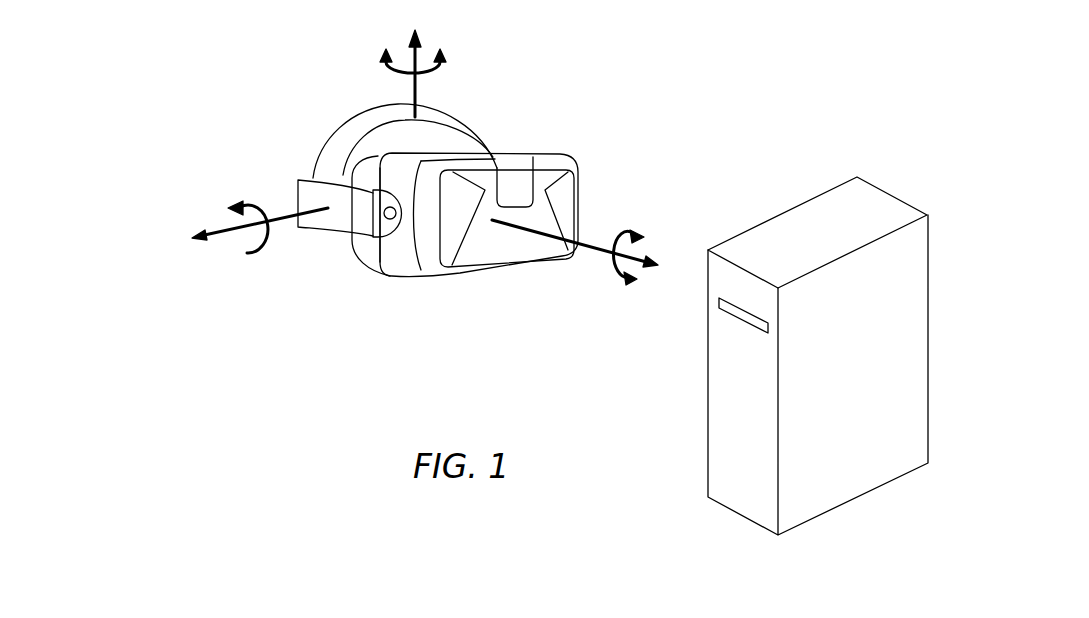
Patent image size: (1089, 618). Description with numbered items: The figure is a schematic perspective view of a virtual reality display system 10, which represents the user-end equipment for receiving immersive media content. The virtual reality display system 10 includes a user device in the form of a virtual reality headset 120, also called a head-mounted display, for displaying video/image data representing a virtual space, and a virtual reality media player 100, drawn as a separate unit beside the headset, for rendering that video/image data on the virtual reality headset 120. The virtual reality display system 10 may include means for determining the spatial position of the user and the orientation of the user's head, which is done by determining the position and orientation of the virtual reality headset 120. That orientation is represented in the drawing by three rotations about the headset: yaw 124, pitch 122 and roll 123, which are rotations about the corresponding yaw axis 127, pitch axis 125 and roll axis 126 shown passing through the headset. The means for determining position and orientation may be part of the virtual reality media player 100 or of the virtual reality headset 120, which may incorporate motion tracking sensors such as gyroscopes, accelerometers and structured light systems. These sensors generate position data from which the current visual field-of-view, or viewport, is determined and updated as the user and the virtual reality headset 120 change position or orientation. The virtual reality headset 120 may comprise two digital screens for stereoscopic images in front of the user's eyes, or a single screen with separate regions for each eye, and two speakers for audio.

The virtual reality display system 10 is at (985, 103).
The virtual reality media player 100 is at (878, 485).
The virtual reality headset 120 is at (497, 273).
The pitch 122 is at (270, 250).
The roll 123 is at (616, 224).
The yaw 124 is at (382, 60).
The pitch axis 125 is at (218, 228).
The roll axis 126 is at (587, 242).
The yaw axis 127 is at (417, 90).